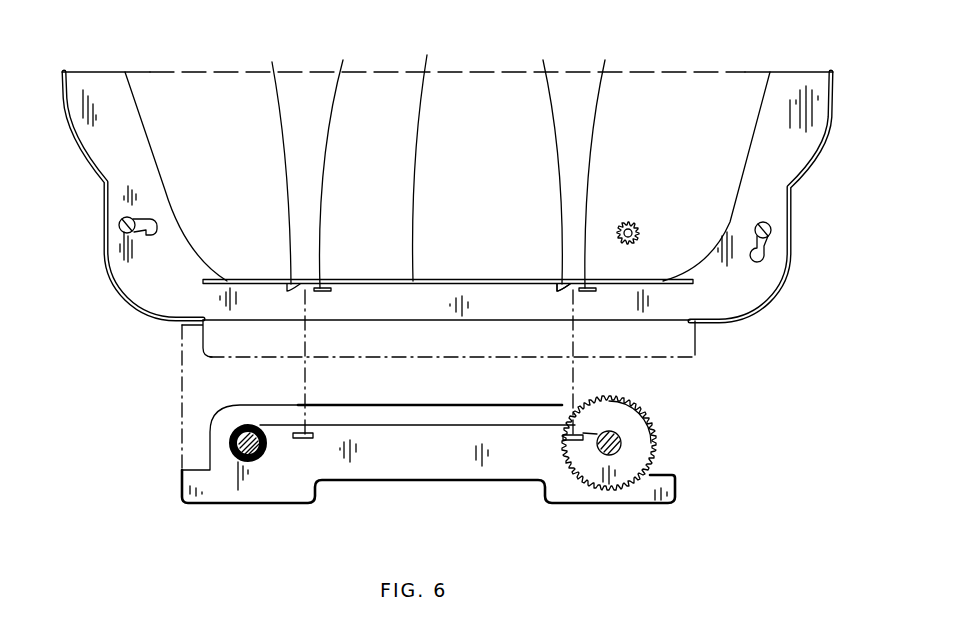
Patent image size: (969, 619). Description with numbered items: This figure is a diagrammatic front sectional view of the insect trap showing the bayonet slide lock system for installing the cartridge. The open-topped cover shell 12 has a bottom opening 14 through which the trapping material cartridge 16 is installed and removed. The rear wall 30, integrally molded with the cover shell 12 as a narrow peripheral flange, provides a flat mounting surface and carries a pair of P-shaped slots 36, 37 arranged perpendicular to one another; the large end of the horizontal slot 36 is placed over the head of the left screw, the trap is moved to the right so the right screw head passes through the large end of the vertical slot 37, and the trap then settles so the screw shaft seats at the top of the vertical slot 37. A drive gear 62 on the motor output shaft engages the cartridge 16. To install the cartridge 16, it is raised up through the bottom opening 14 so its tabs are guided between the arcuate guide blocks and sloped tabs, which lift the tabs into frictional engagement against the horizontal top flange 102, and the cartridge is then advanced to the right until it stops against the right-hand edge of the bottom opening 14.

The cover shell 12 is at (791, 255).
The bottom opening 14 is at (668, 322).
The trapping material cartridge 16 is at (620, 508).
The rear wall 30 is at (790, 128).
The horizontal P-shaped slot 36 is at (147, 243).
The vertical P-shaped slot 37 is at (770, 262).
The drive gear 62 is at (627, 221).
The horizontal top flange 102 is at (432, 156).